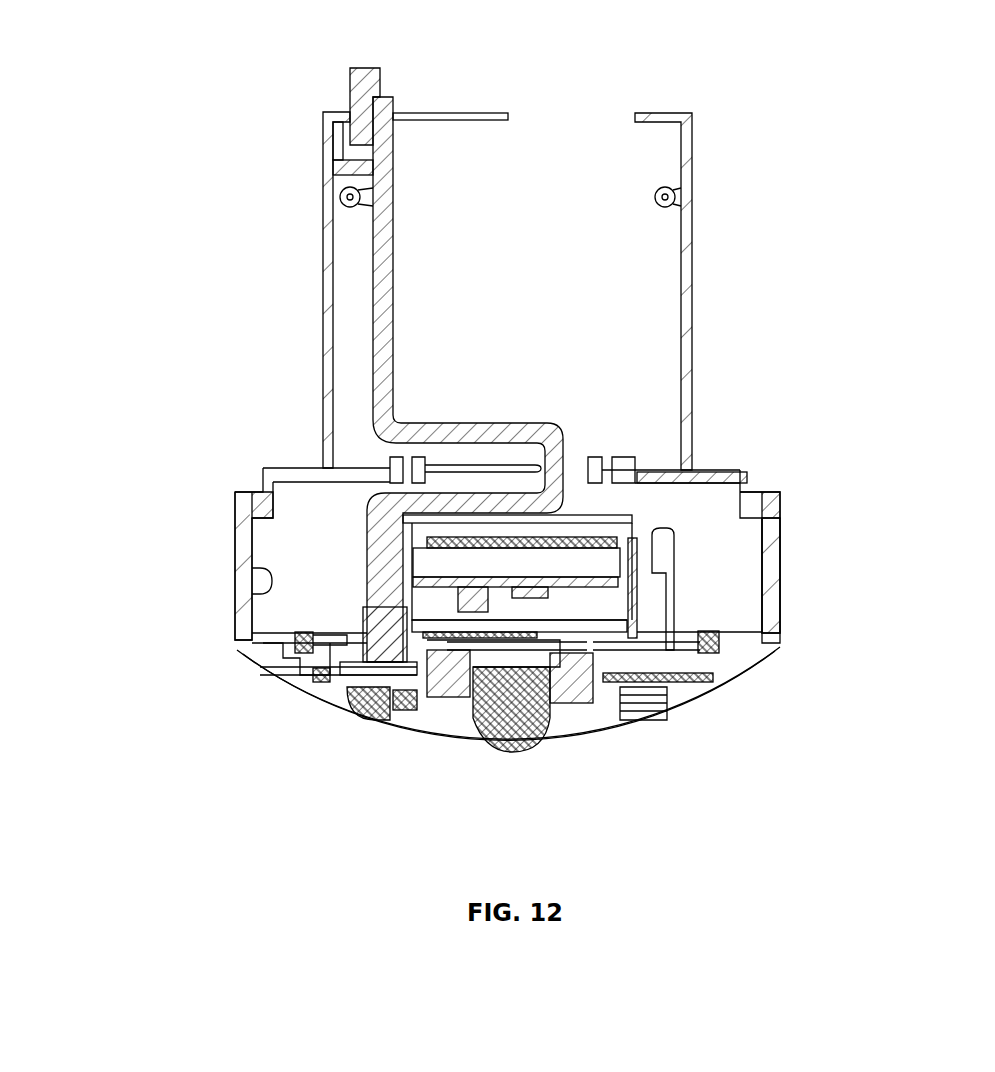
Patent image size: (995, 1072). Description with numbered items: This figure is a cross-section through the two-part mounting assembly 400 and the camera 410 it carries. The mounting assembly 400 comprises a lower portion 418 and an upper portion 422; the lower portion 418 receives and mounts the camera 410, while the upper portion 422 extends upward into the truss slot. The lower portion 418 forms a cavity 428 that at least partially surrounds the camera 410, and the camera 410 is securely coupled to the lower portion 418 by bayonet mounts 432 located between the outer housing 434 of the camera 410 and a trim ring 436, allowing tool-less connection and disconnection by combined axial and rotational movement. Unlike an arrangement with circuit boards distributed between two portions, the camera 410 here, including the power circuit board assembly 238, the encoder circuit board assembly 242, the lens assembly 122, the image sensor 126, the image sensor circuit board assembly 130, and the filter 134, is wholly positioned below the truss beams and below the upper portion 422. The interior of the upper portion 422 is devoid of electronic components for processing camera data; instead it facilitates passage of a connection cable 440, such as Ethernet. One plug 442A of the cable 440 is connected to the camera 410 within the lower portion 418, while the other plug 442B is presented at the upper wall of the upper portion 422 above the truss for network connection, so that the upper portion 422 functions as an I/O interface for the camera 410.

The mounting assembly 400 is at (789, 81).
The second plug 442B is at (355, 100).
The connection cable 440 is at (382, 222).
The upper portion 422 is at (692, 345).
The encoder circuit board assembly 242 is at (417, 545).
The power circuit board assembly 238 is at (420, 577).
The cavity 428 is at (252, 572).
The camera 410 is at (690, 528).
The lower portion 418 is at (775, 578).
The outer housing 434 is at (671, 610).
The trim ring 436 is at (753, 633).
The bayonet mounts 432 is at (310, 636).
The first plug 442A is at (383, 622).
The image sensor circuit board assembly 130 is at (425, 675).
The filter 134 is at (463, 647).
The lens assembly 122 is at (514, 752).
The image sensor 126 is at (560, 700).